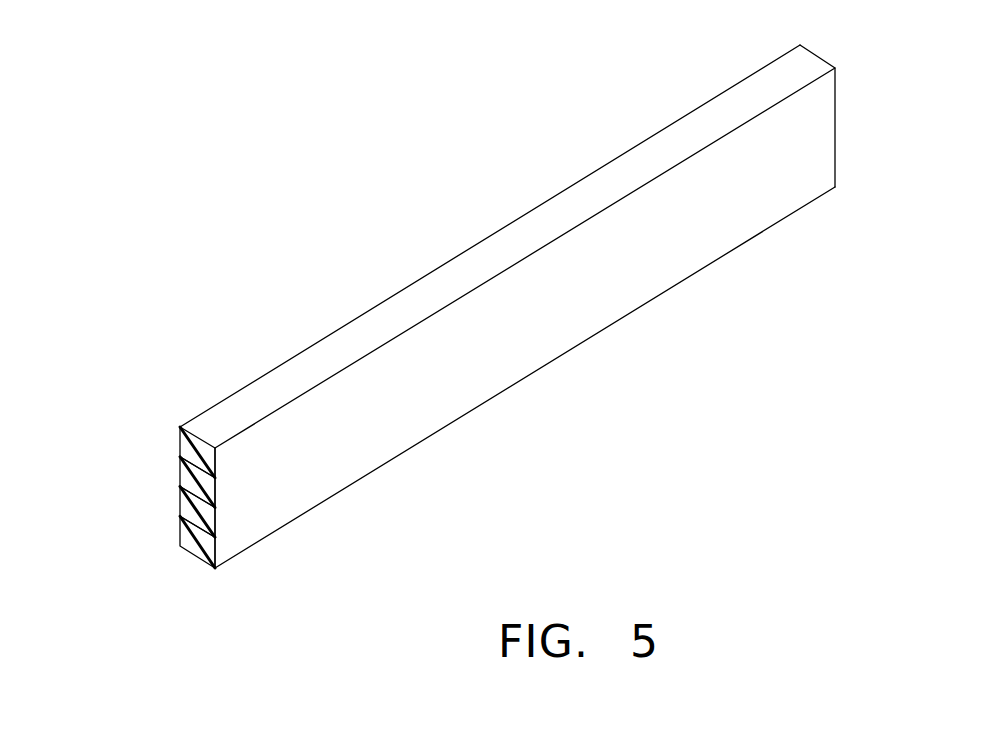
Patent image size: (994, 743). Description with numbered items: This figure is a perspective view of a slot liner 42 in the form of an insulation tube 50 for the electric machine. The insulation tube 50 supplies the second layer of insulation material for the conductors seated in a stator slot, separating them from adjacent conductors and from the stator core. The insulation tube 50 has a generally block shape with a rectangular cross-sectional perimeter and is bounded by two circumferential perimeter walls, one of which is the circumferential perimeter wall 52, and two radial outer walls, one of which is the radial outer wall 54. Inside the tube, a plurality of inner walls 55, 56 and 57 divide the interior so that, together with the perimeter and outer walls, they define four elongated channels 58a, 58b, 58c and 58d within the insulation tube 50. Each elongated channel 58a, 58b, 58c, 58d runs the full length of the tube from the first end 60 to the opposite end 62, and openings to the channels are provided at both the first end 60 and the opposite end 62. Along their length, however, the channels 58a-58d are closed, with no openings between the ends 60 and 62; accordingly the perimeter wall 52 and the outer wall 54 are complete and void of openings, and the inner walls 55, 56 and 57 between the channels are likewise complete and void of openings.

The slot liner 42 is at (475, 328).
The insulation tube 50 is at (475, 328).
The circumferential perimeter wall 52 is at (568, 312).
The radial outer wall 54 is at (337, 327).
The inner wall 55 is at (215, 463).
The inner wall 56 is at (215, 492).
The inner wall 57 is at (215, 523).
The elongated channel 58a is at (180, 440).
The elongated channel 58b is at (180, 476).
The elongated channel 58c is at (180, 508).
The elongated channel 58d is at (183, 552).
The first end 60 is at (145, 469).
The opposite end 62 is at (812, 52).